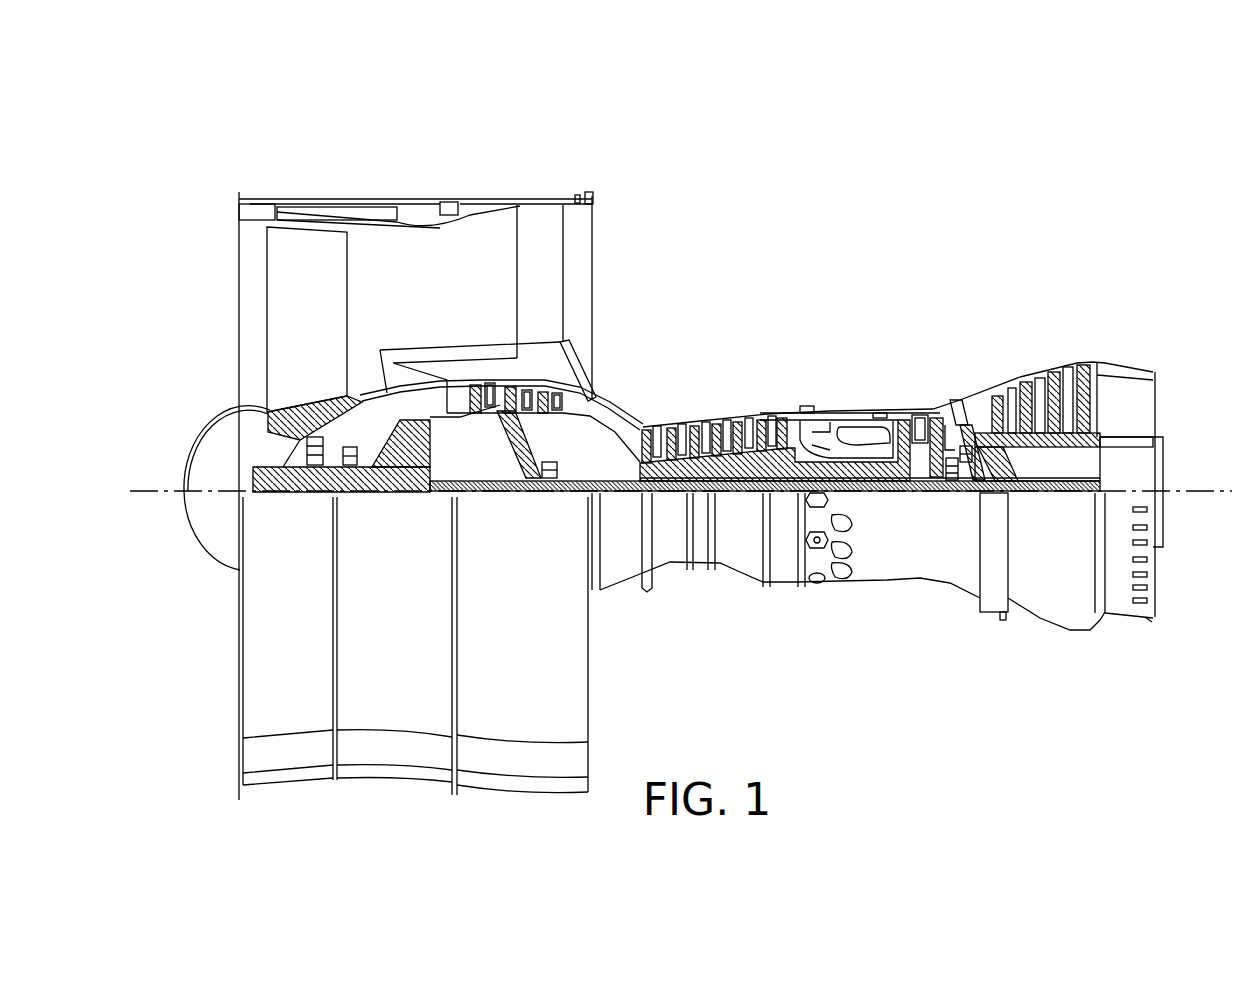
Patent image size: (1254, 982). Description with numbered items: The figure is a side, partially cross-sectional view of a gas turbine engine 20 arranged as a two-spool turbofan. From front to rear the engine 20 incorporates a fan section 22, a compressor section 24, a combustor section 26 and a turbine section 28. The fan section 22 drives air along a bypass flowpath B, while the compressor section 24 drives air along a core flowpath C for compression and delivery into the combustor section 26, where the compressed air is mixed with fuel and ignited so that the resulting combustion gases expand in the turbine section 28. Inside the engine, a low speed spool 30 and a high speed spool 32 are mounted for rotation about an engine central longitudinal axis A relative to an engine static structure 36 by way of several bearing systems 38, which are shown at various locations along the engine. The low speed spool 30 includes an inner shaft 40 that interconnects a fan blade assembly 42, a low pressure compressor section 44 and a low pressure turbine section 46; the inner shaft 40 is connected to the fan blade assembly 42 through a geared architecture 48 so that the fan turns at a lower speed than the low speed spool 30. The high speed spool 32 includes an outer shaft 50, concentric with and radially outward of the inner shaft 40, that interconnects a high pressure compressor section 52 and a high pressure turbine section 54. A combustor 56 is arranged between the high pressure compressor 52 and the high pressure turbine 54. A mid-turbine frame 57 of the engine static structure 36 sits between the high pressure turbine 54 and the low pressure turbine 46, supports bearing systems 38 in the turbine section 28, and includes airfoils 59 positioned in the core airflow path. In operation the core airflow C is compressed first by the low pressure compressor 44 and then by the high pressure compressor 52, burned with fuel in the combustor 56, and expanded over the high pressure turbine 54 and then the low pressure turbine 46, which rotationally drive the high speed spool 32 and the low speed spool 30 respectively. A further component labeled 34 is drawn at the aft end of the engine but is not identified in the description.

The gas turbine engine 20 is at (868, 170).
The fan section 22 is at (356, 190).
The compressor section 24 is at (616, 392).
The combustor section 26 is at (832, 396).
The turbine section 28 is at (1023, 364).
The low speed spool 30 is at (742, 500).
The high speed spool 32 is at (767, 460).
The exhaust section 34 is at (1077, 460).
The engine static structure 36 is at (782, 584).
The bearing systems 38 is at (337, 457).
The inner shaft 40 is at (607, 493).
The fan blade assembly 42 is at (294, 302).
The low pressure compressor section 44 is at (490, 392).
The low pressure turbine section 46 is at (1020, 363).
The geared architecture 48 is at (415, 478).
The outer shaft 50 is at (883, 493).
The high pressure compressor section 52 is at (710, 458).
The high pressure turbine section 54 is at (920, 418).
The combustor 56 is at (857, 438).
The mid-turbine frame 57 is at (956, 397).
The airfoils 59 is at (957, 424).
The engine central longitudinal axis A is at (1190, 497).
The bypass flowpath B is at (452, 287).
The core flowpath C is at (402, 378).